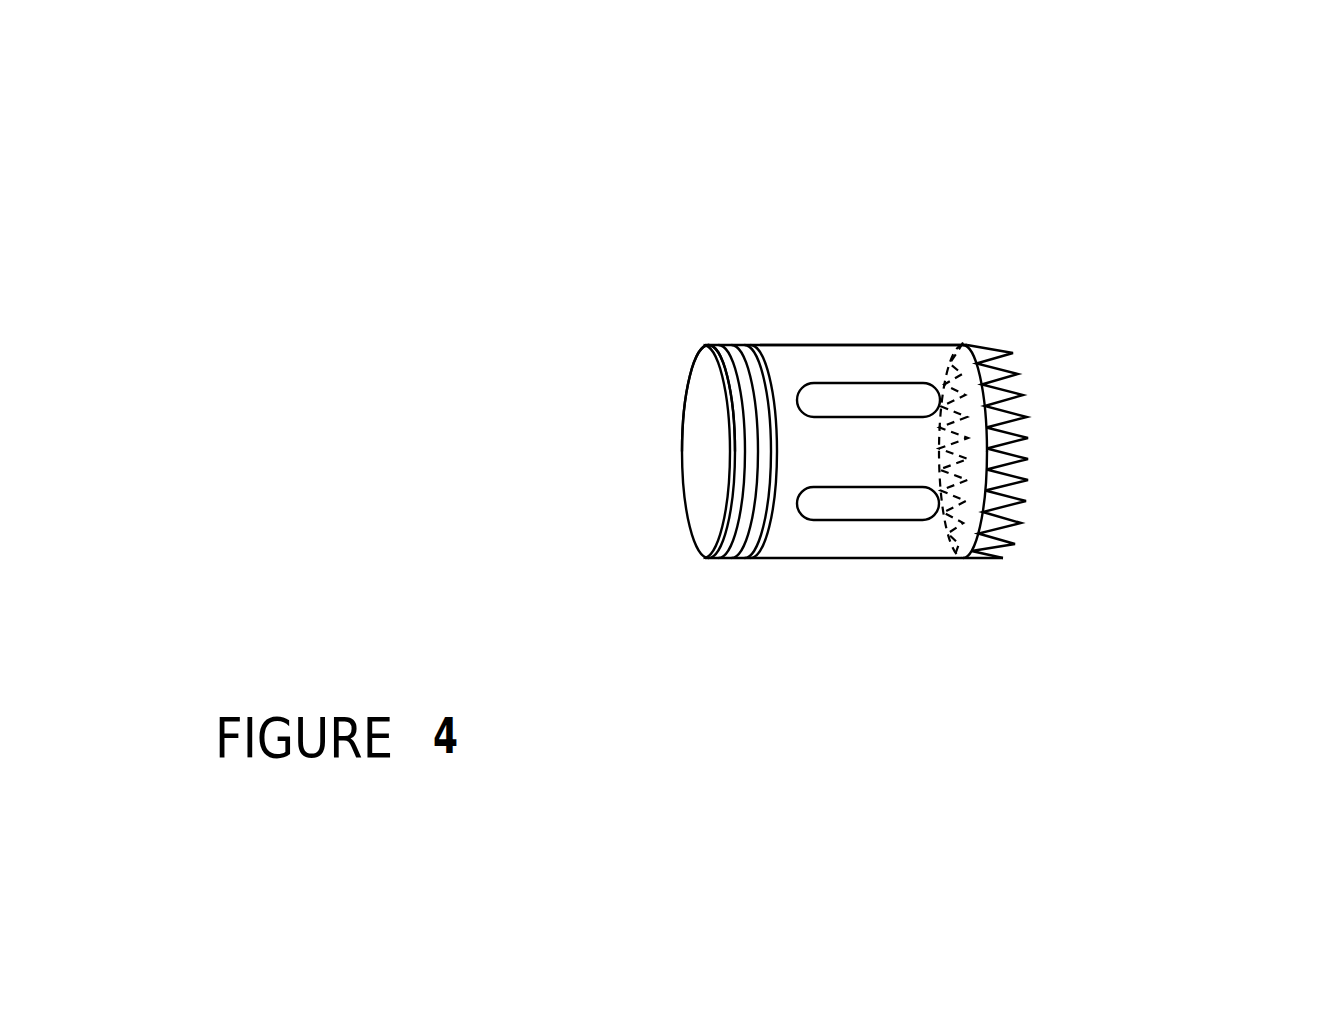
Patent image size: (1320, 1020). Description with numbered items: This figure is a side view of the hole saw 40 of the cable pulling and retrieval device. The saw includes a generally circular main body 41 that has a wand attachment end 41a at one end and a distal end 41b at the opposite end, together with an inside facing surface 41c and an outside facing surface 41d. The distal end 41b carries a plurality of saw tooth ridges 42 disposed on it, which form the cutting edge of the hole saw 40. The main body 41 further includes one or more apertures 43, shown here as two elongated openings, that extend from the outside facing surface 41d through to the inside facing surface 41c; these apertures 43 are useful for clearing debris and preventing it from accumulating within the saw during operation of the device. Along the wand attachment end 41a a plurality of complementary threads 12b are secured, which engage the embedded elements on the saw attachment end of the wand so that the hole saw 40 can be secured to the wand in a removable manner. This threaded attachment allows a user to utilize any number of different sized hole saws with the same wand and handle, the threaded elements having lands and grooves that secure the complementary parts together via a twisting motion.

The hole saw 40 is at (420, 173).
The main body 41 is at (870, 467).
The wand attachment end 41a is at (614, 452).
The distal end 41b is at (1095, 452).
The inside facing surface 41c is at (917, 472).
The outside facing surface 41d is at (922, 352).
The saw tooth ridges 42 is at (1023, 416).
The apertures 43 is at (836, 398).
The complementary threads 12b is at (725, 350).